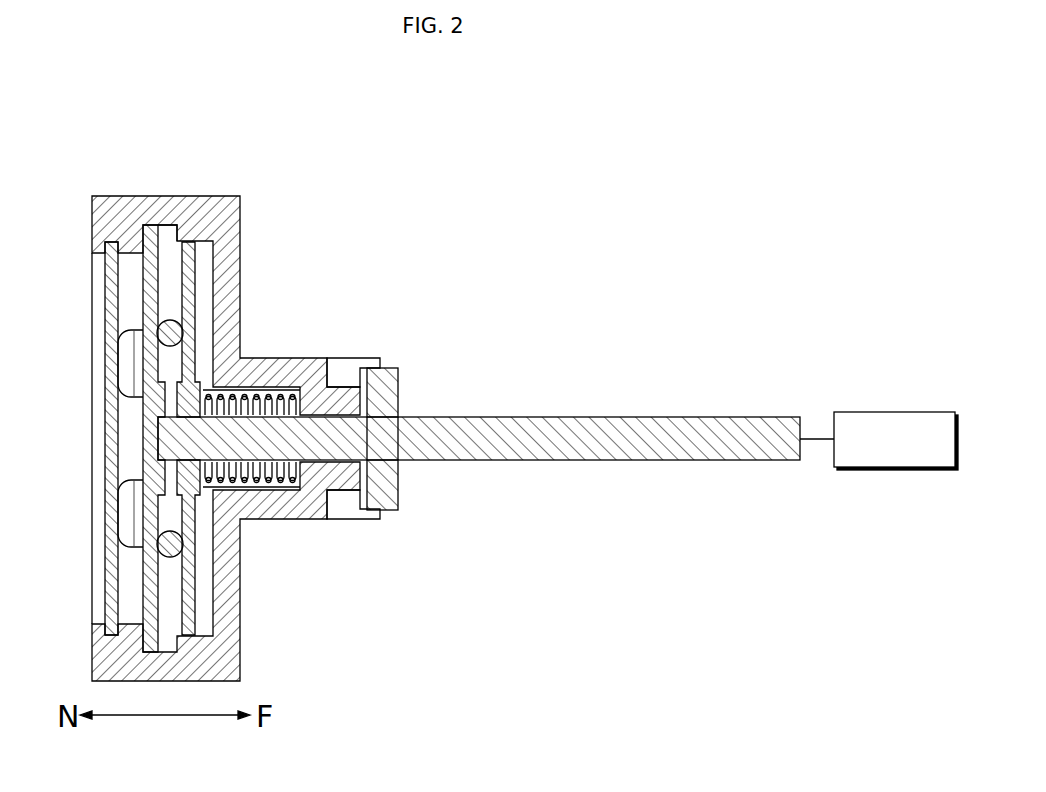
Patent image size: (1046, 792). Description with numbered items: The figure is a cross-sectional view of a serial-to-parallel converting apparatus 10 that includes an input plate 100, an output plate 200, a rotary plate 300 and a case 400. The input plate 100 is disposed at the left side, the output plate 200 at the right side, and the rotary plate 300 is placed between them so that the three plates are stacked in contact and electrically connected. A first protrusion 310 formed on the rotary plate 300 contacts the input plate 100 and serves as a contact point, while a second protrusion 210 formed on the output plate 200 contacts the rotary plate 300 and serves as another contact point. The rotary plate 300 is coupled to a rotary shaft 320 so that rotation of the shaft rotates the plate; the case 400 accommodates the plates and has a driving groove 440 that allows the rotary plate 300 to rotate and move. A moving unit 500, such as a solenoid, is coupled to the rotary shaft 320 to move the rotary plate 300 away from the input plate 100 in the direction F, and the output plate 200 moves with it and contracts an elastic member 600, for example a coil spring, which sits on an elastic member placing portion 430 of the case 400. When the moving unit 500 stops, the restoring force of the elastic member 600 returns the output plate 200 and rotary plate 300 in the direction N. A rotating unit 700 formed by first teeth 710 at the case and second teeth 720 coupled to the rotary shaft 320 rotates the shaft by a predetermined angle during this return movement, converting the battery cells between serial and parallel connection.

The serial-to-parallel converting apparatus 10 is at (111, 120).
The input plate 100 is at (112, 300).
The output plate 200 is at (190, 256).
The second protrusion 210 is at (179, 322).
The rotary plate 300 is at (150, 222).
The first protrusion 310 is at (127, 357).
The rotary shaft 320 is at (585, 419).
The case 400 is at (222, 196).
The elastic member placing portion 430 is at (260, 395).
The driving groove 440 is at (167, 228).
The moving unit 500 is at (895, 412).
The elastic member 600 is at (288, 393).
The rotating unit 700 is at (401, 414).
The first teeth 710 is at (362, 361).
The second teeth 720 is at (393, 390).